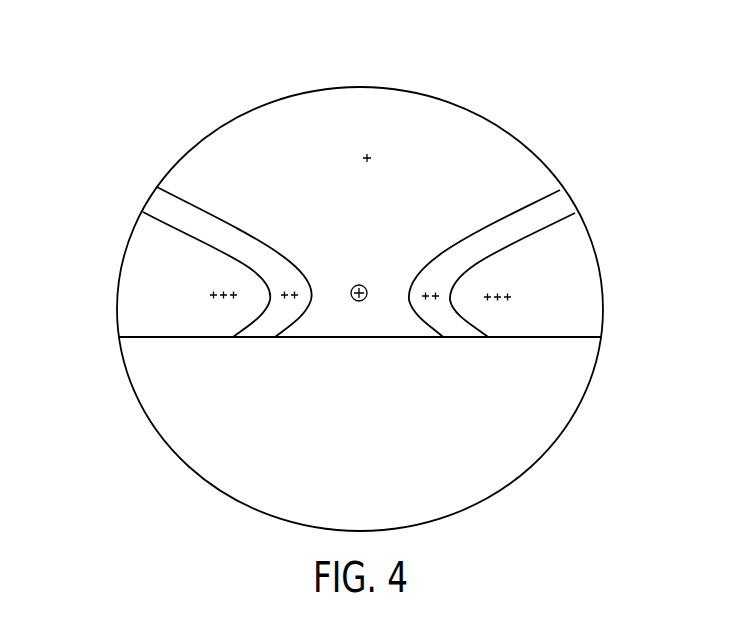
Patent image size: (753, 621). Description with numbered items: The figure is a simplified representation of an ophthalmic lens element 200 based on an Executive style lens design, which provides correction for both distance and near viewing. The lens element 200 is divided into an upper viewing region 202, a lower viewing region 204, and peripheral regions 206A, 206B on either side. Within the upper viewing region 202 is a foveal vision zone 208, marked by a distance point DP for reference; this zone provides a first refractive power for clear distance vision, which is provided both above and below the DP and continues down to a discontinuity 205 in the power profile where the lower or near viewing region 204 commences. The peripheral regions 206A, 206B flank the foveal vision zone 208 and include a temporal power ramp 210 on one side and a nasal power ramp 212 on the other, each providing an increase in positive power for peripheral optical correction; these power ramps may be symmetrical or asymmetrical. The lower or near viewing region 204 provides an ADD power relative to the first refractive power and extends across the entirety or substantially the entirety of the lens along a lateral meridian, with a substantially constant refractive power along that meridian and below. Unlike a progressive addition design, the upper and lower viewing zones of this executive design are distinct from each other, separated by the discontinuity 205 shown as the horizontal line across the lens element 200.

The ophthalmic lens element 200 is at (602, 83).
The upper viewing region 202 is at (381, 141).
The lower viewing region 204 is at (379, 407).
The discontinuity 205 is at (398, 338).
The peripheral region 206A is at (120, 245).
The peripheral region 206B is at (600, 272).
The foveal vision zone 208 is at (348, 236).
The temporal power ramp 210 is at (178, 328).
The nasal power ramp 212 is at (567, 328).